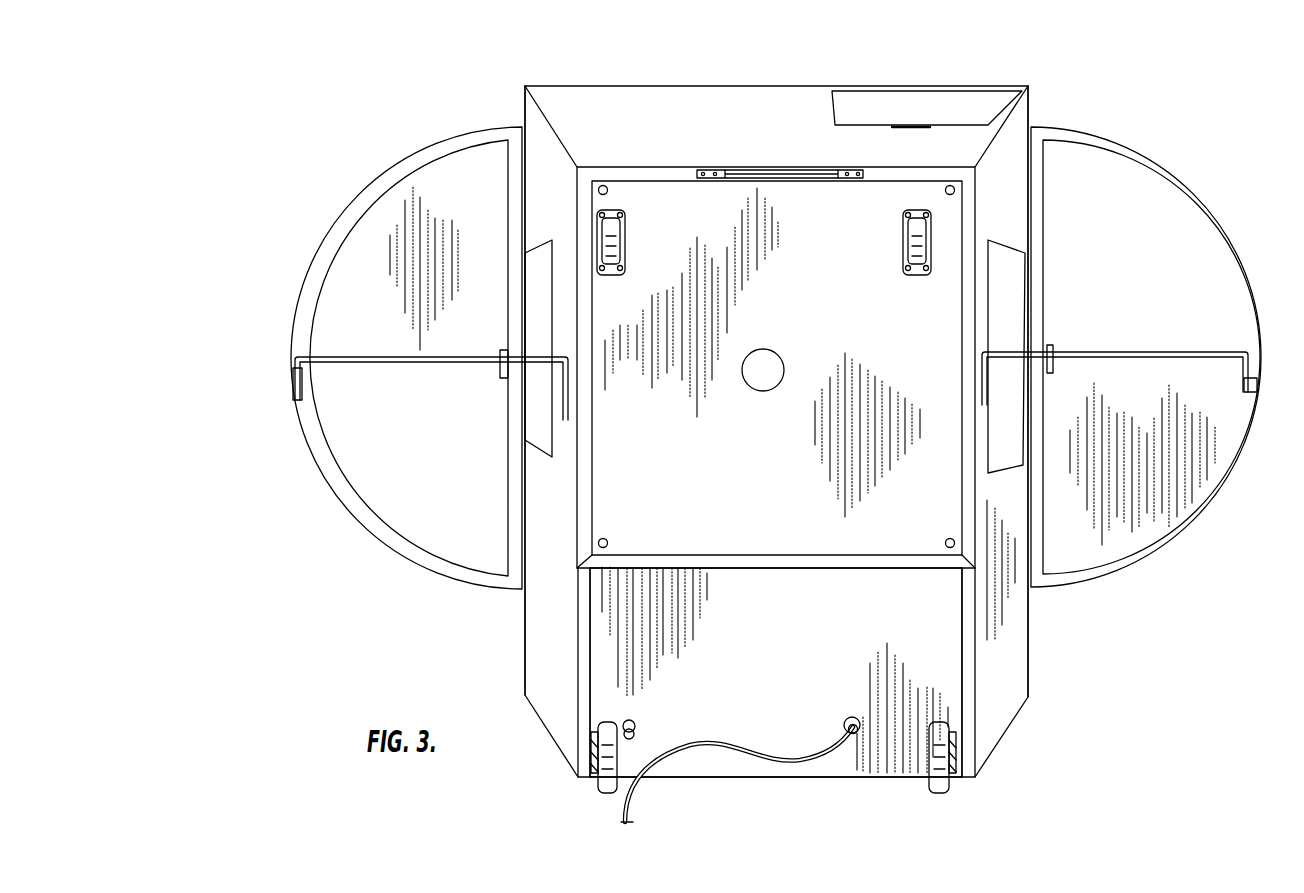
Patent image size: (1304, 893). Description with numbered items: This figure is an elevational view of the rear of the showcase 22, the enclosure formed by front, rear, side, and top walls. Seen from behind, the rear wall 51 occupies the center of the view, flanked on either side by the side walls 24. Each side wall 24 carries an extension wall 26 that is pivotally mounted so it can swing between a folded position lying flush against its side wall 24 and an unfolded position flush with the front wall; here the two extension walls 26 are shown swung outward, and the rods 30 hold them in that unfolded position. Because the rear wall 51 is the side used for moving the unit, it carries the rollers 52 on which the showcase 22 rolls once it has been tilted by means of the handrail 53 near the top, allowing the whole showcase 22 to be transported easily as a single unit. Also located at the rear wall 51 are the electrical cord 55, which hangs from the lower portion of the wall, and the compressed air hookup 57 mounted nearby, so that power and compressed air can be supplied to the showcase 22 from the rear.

The showcase 22 is at (962, 54).
The side walls 24 is at (535, 123).
The extension walls 26 is at (337, 323).
The rods 30 is at (435, 370).
The rear wall 51 is at (799, 631).
The rollers 52 is at (623, 233).
The handrail 53 is at (780, 170).
The electrical cord 55 is at (742, 757).
The compressed air hookup 57 is at (631, 721).